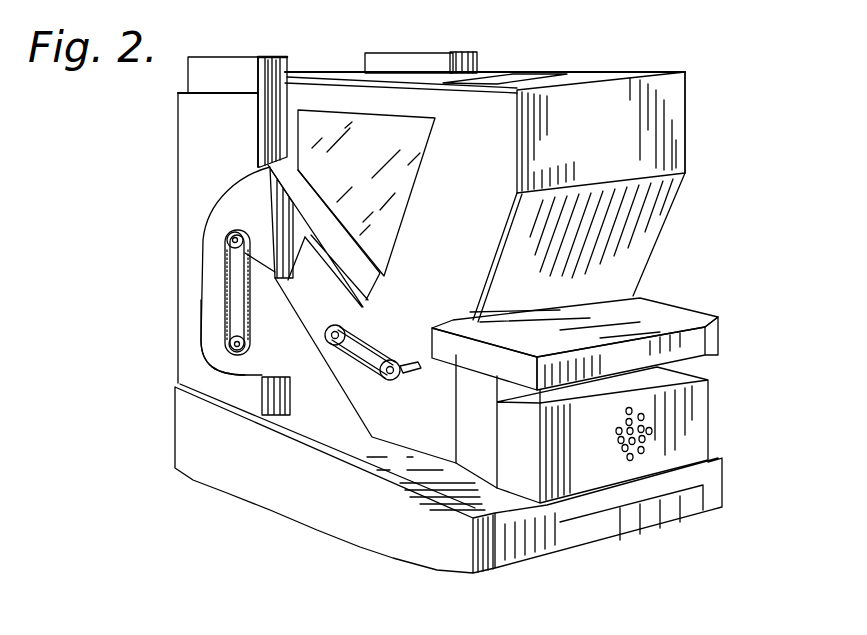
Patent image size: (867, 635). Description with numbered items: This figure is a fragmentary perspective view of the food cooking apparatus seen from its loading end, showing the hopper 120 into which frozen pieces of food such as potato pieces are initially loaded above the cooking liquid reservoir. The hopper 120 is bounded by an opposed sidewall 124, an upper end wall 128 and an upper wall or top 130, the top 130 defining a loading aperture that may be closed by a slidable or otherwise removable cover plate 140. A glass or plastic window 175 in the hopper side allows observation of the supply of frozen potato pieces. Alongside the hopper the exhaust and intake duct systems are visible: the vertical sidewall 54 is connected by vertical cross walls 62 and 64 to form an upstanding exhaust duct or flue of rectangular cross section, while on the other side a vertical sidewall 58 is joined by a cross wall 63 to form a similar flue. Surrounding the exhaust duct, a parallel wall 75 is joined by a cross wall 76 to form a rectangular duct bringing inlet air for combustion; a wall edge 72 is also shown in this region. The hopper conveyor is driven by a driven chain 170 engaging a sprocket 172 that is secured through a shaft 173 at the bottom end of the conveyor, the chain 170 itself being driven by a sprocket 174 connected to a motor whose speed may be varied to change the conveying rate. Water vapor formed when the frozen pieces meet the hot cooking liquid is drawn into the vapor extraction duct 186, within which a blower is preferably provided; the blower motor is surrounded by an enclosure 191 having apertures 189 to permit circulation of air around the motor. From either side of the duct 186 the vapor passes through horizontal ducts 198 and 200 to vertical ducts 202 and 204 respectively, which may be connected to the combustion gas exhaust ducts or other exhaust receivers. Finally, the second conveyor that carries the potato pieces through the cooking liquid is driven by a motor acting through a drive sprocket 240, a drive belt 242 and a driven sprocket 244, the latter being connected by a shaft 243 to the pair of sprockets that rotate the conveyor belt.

The vertical sidewall 54 is at (222, 93).
The vertical sidewall 58 is at (387, 54).
The vertical cross wall 62 is at (200, 56).
The vertical cross wall 63 is at (443, 63).
The vertical cross wall 64 is at (265, 56).
The plate edge 72 is at (258, 148).
The wall 75 is at (190, 134).
The cross wall 76 is at (180, 92).
The hopper 120 is at (642, 62).
The sidewall 124 is at (497, 142).
The upper end wall 128 is at (665, 134).
The upper wall or top 130 is at (568, 68).
The cover plate 140 is at (500, 74).
The driven chain 170 is at (350, 380).
The sprocket 172 is at (399, 333).
The shaft 173 is at (402, 382).
The sprocket 174 is at (383, 279).
The window 175 is at (392, 203).
The vapor extraction duct 186 is at (651, 312).
The apertures 189 is at (616, 417).
The enclosure 191 is at (699, 431).
The horizontal duct 198 is at (722, 325).
The horizontal duct 200 is at (475, 350).
The vertical duct 202 is at (488, 50).
The vertical duct 204 is at (298, 54).
The drive sprocket 240 is at (228, 241).
The drive belt 242 is at (228, 290).
The shaft 243 is at (241, 355).
The driven sprocket 244 is at (226, 343).